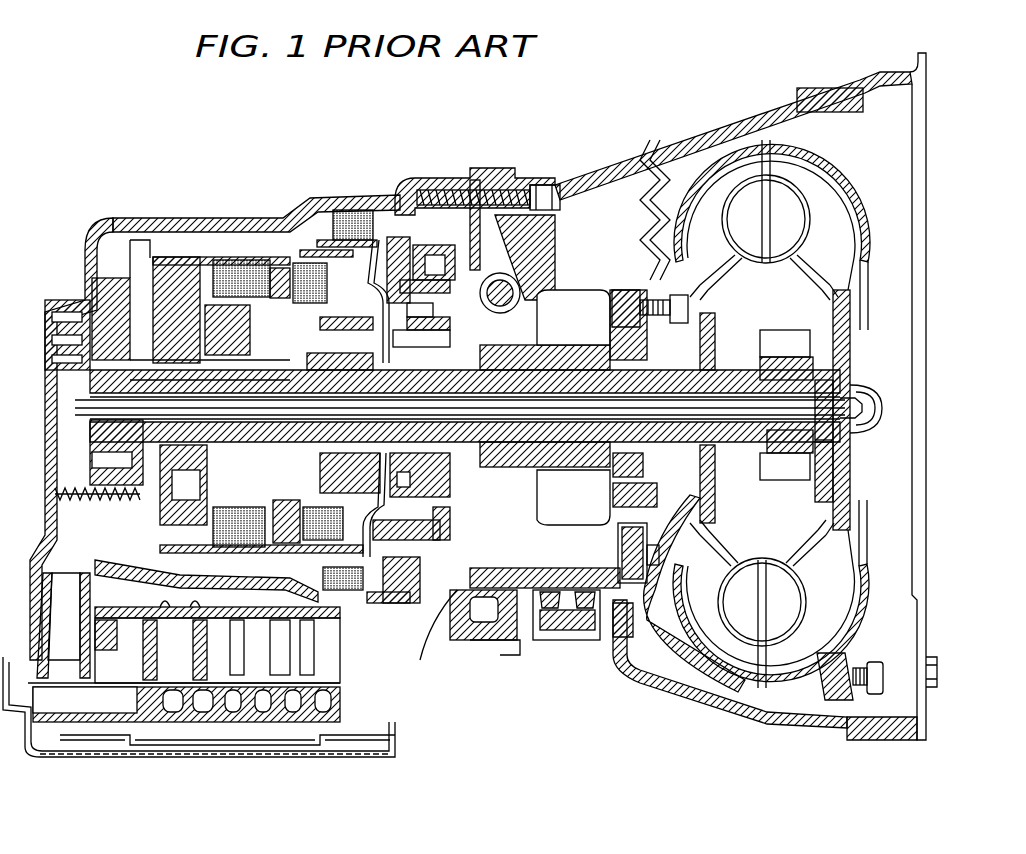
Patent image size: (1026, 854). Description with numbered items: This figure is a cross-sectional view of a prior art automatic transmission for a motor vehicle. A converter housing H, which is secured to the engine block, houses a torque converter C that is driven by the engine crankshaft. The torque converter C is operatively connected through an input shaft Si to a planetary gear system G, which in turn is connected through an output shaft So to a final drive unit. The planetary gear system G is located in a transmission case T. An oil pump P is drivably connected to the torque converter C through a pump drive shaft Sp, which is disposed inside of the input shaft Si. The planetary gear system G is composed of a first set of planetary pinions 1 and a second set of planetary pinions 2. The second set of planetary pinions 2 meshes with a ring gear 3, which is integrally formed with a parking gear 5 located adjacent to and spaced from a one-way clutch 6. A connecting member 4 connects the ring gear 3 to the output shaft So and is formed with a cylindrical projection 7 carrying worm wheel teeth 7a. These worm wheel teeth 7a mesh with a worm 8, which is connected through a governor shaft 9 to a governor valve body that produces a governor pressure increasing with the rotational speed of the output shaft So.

The transmission case T is at (252, 218).
The first set of planetary pinions 1 is at (352, 290).
The planetary gear system G is at (376, 215).
The second set of planetary pinions 2 is at (412, 213).
The one-way clutch 6 is at (424, 262).
The parking gear 5 is at (446, 268).
The ring gear 3 is at (477, 222).
The cylindrical projection 7 is at (513, 193).
The worm wheel teeth 7a is at (521, 272).
The worm 8 is at (514, 283).
The governor shaft 9 is at (533, 280).
The connecting member 4 is at (520, 377).
The output shaft So is at (545, 375).
The converter housing H is at (658, 130).
The torque converter C is at (840, 226).
The input shaft Si is at (860, 406).
The pump drive shaft Sp is at (845, 447).
The oil pump P is at (100, 460).